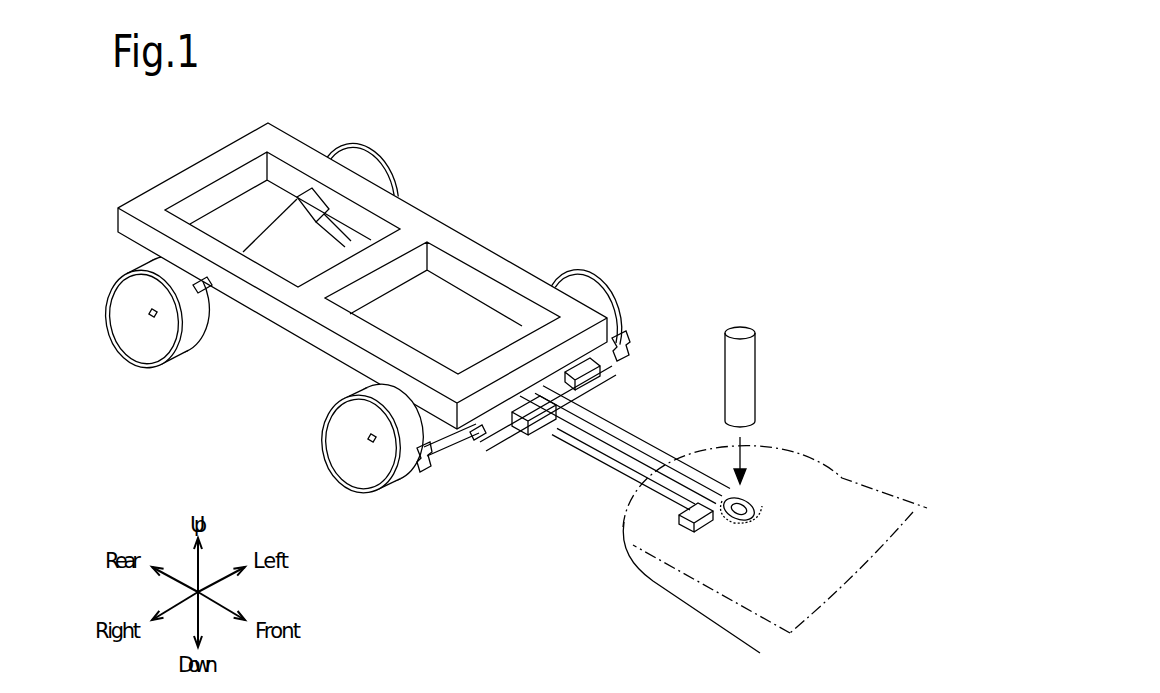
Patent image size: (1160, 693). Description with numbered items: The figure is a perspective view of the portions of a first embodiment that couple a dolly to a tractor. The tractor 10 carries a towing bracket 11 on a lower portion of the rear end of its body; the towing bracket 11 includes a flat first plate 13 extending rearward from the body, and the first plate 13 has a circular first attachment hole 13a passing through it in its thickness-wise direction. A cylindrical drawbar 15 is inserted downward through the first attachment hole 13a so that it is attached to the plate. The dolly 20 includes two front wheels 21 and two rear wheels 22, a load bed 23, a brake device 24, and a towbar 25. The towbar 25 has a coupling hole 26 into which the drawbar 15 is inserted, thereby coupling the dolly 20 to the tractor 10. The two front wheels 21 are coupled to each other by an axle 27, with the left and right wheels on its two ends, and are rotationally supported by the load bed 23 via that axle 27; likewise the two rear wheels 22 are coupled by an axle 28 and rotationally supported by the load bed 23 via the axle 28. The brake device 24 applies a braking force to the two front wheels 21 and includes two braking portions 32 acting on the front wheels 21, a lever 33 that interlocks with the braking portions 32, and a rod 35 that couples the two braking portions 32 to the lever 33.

The tractor 10 is at (914, 430).
The towing bracket 11 is at (847, 477).
The first plate 13 is at (663, 588).
The first attachment hole 13a is at (760, 490).
The drawbar 15 is at (740, 327).
The dolly 20 is at (521, 167).
The front wheels 21 is at (590, 280).
The rear wheels 22 is at (376, 160).
The load bed 23 is at (480, 245).
The brake device 24 is at (567, 499).
The towbar 25 is at (624, 428).
The coupling hole 26 is at (751, 524).
The axle 27 is at (326, 458).
The axle 28 is at (270, 245).
The braking portions 32 is at (630, 345).
The lever 33 is at (731, 521).
The rod 35 is at (597, 467).